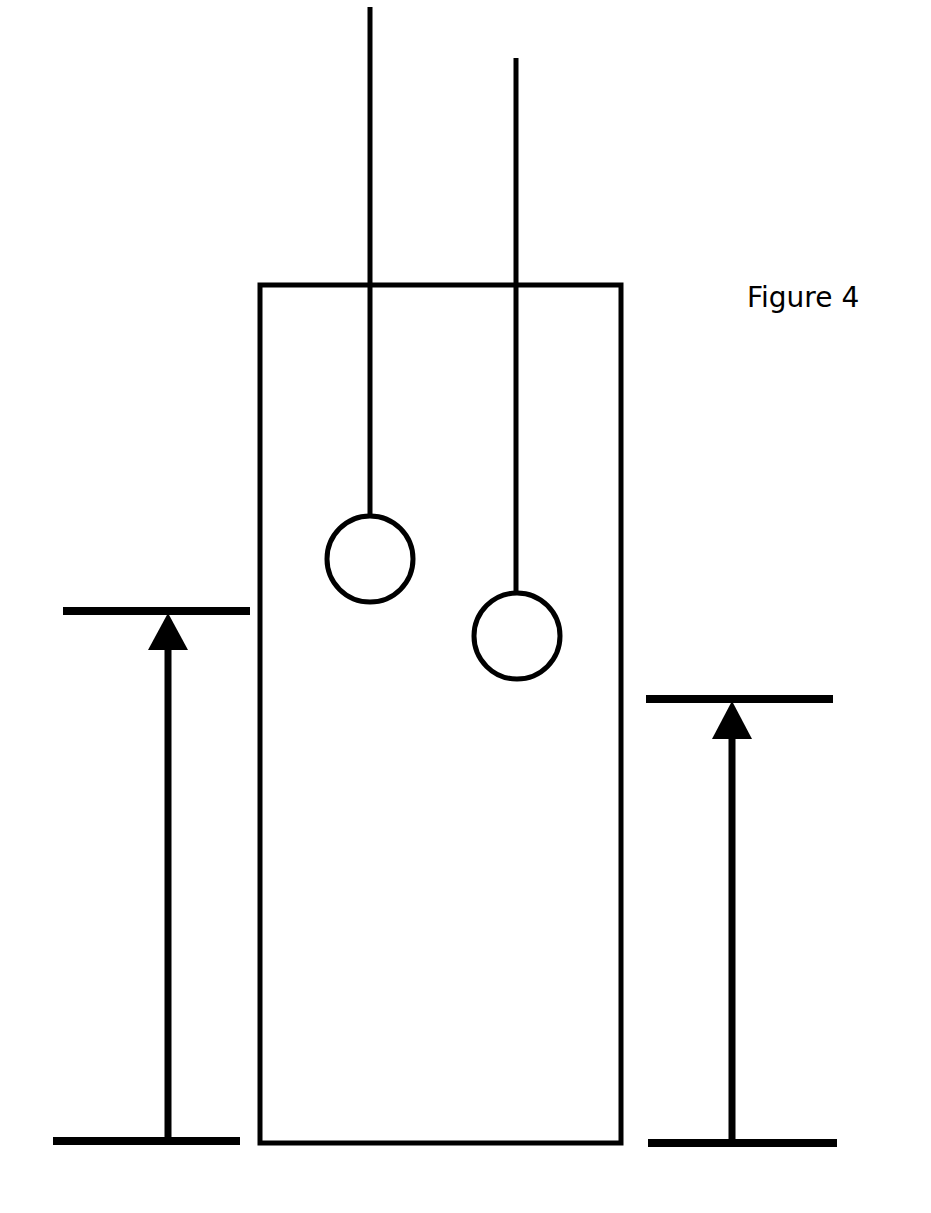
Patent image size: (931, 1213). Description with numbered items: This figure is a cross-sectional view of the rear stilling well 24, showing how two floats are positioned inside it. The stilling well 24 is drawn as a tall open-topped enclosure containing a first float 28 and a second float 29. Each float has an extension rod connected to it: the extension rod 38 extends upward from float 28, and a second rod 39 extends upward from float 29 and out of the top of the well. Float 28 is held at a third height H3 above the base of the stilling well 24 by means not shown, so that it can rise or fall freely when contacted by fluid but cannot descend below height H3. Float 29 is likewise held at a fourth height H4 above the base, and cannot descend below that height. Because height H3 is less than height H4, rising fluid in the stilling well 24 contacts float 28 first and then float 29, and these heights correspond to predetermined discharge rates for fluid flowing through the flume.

The rear stilling well 24 is at (631, 460).
The first rod / probe 39 is at (357, 160).
The extension rod 38 is at (522, 242).
The float 29 is at (355, 540).
The float 28 is at (543, 639).
The fourth height H4 is at (158, 862).
The third height H3 is at (743, 957).